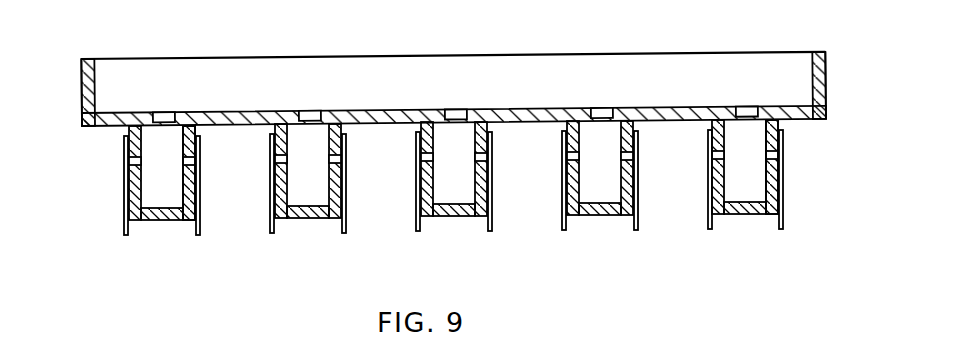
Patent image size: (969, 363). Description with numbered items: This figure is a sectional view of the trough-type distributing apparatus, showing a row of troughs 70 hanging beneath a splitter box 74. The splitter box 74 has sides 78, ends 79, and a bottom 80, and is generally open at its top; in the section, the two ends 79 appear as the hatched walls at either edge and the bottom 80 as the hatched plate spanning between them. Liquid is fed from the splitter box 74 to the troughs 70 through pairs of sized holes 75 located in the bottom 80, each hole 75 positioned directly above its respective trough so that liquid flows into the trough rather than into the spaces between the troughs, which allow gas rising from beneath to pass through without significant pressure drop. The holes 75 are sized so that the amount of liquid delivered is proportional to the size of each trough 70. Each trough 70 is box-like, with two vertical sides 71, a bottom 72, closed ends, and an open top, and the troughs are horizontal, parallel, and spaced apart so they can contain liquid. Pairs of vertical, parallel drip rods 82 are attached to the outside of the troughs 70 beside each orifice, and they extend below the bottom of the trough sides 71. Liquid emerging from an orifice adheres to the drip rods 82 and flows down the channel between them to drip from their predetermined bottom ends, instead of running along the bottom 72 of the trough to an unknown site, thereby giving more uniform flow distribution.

The trough 70 is at (140, 231).
The vertical side 71 is at (262, 135).
The bottom 72 is at (272, 236).
The splitter box 74 is at (358, 36).
The sized hole 75 is at (150, 112).
The side 78 is at (460, 56).
The end 79 is at (84, 102).
The bottom 80 is at (454, 103).
The drip rod 82 is at (127, 237).